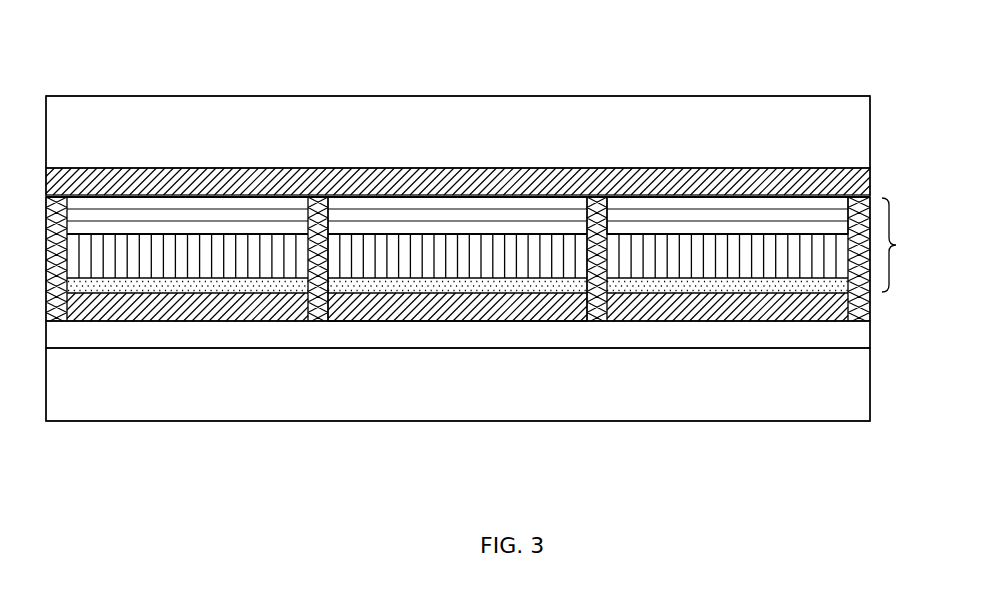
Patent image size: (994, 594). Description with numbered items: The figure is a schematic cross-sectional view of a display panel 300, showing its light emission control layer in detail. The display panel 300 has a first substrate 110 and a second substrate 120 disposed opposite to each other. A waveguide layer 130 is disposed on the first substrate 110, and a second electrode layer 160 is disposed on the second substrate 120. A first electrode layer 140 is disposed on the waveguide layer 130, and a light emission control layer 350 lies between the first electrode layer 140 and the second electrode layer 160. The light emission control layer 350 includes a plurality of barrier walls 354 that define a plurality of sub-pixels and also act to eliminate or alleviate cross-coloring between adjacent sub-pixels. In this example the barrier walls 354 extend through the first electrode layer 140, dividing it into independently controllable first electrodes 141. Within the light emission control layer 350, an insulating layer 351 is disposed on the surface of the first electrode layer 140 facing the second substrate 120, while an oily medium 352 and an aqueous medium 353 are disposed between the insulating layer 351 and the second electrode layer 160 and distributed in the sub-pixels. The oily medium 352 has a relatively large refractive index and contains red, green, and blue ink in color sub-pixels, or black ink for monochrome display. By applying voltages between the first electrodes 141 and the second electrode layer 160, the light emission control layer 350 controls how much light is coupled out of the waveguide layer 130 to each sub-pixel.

The display panel 300 is at (69, 38).
The first substrate 110 is at (162, 374).
The second substrate 120 is at (183, 148).
The waveguide layer 130 is at (273, 332).
The first electrode layer 140 is at (400, 307).
The first electrodes 141 is at (662, 308).
The second electrode layer 160 is at (337, 180).
The light emission control layer 350 is at (498, 259).
The insulating layer 351 is at (777, 283).
The oily medium 352 is at (530, 265).
The aqueous medium 353 is at (662, 213).
The barrier walls 354 is at (597, 202).